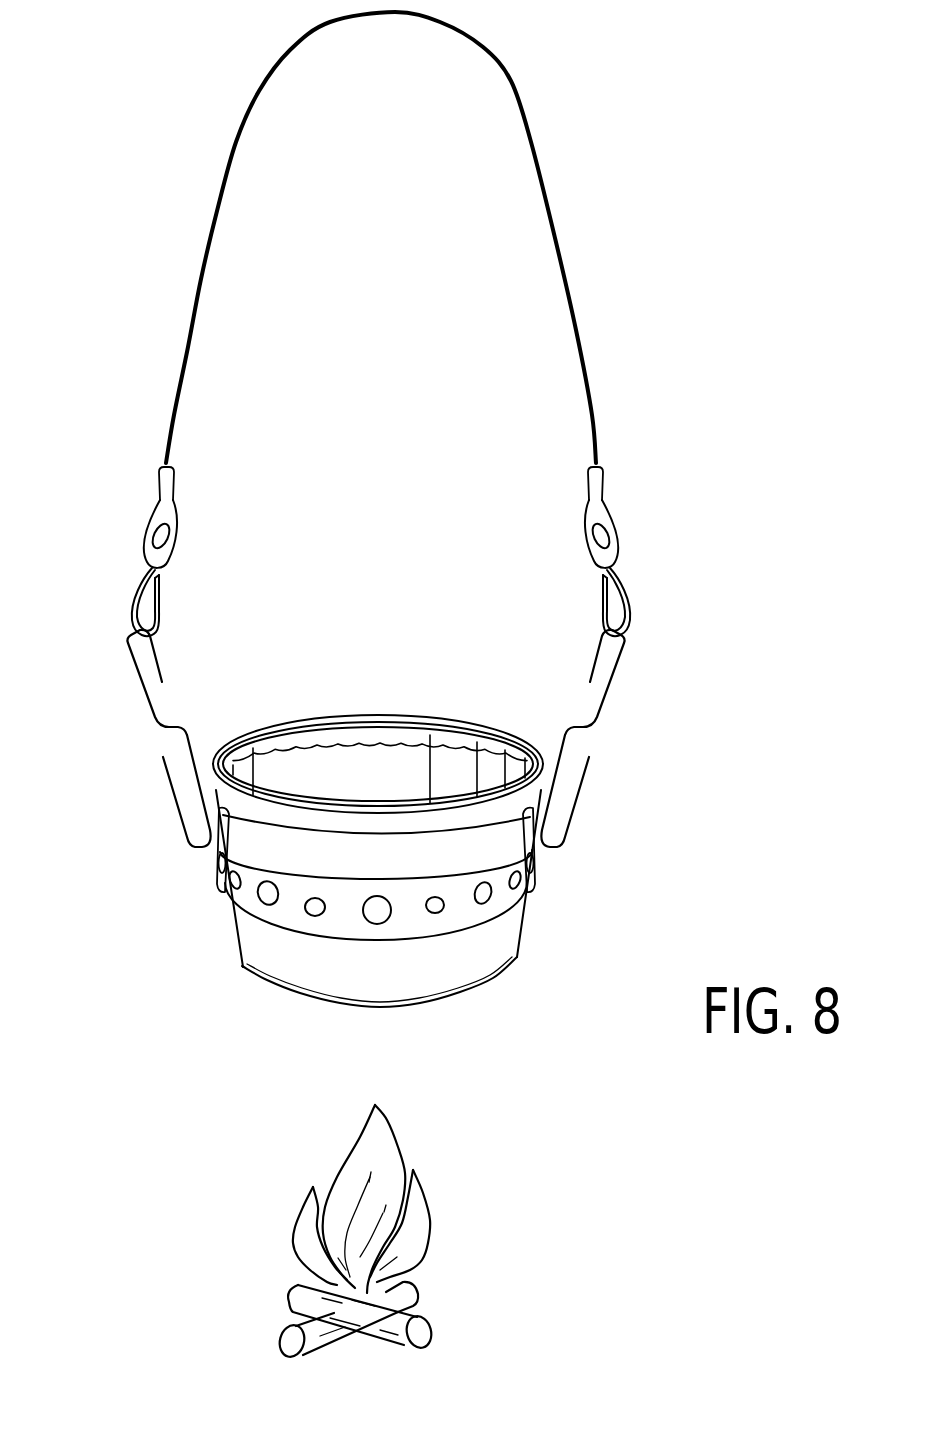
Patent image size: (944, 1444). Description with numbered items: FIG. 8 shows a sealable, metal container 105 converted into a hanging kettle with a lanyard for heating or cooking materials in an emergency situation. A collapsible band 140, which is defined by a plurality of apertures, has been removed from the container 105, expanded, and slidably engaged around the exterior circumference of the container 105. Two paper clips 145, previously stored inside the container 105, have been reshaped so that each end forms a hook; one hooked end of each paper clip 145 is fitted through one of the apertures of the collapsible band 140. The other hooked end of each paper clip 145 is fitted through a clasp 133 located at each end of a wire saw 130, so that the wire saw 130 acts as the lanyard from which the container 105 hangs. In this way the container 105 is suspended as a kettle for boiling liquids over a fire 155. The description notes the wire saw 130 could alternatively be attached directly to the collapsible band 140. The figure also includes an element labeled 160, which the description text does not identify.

The sealable, metal container 105 is at (235, 938).
The wire saw 130 is at (555, 243).
The clasp 133 is at (158, 596).
The collapsible band 140 is at (218, 878).
The paper clip 145 is at (150, 701).
The fire 155 is at (430, 1237).
The liner 160 is at (357, 745).